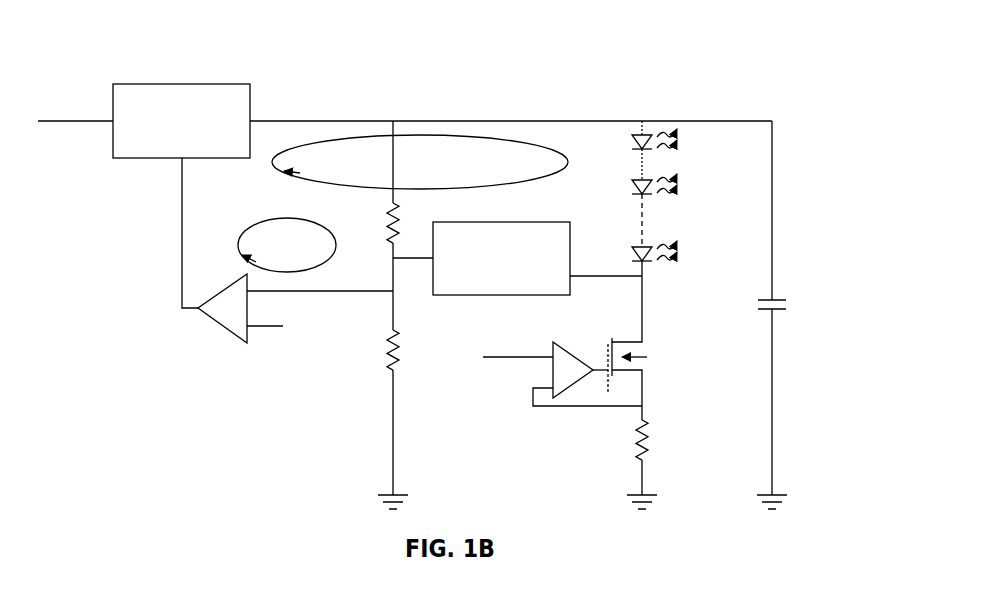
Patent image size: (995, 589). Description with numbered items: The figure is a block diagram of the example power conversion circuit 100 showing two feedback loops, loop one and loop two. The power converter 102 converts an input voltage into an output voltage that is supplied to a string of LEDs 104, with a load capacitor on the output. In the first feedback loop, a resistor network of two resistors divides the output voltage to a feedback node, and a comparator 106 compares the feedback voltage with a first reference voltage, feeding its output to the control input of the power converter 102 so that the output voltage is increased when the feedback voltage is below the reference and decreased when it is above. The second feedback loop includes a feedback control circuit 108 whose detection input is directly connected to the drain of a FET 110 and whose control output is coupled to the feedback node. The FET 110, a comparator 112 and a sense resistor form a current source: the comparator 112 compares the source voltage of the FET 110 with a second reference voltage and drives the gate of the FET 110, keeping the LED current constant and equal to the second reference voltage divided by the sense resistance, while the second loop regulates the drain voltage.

The power conversion circuit 100 is at (123, 30).
The power converter 102 is at (173, 84).
The light emitting diodes 104 is at (754, 212).
The comparator 106 is at (222, 290).
The feedback control circuit 108 is at (492, 222).
The field-effect transistor 110 is at (750, 382).
The comparator 112 is at (572, 353).